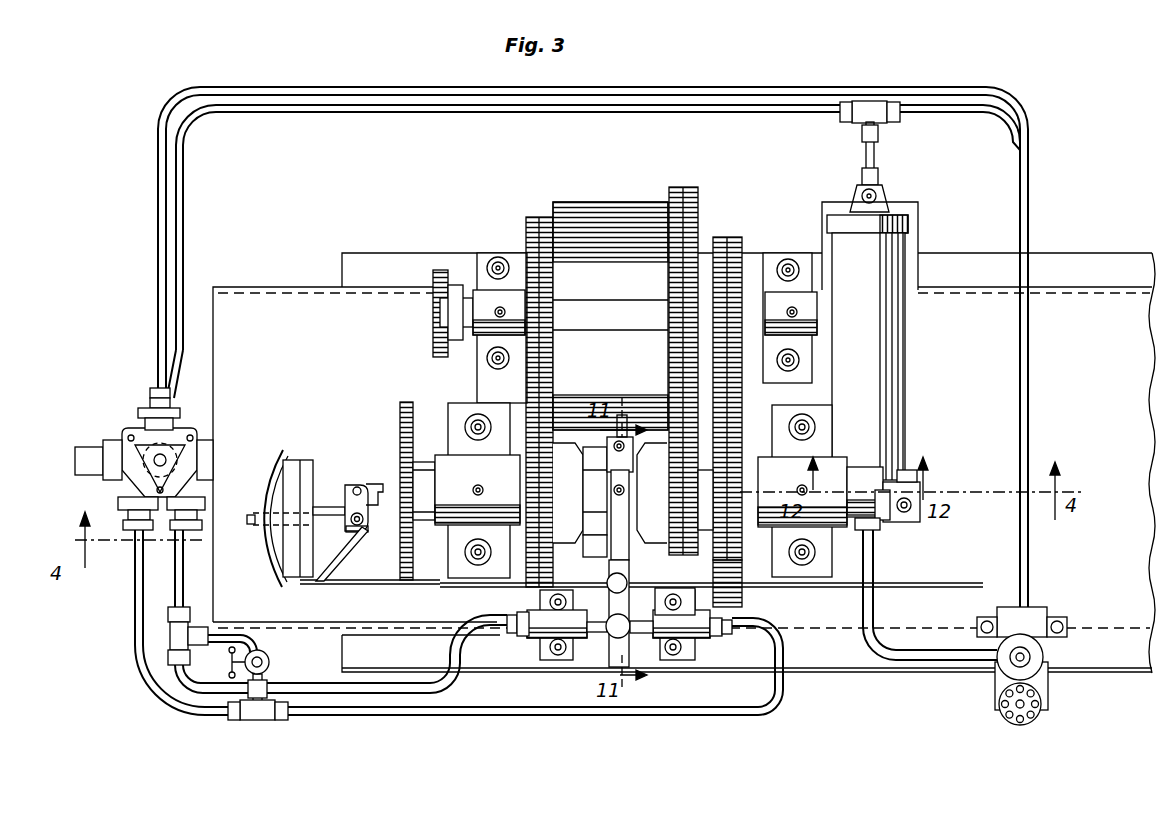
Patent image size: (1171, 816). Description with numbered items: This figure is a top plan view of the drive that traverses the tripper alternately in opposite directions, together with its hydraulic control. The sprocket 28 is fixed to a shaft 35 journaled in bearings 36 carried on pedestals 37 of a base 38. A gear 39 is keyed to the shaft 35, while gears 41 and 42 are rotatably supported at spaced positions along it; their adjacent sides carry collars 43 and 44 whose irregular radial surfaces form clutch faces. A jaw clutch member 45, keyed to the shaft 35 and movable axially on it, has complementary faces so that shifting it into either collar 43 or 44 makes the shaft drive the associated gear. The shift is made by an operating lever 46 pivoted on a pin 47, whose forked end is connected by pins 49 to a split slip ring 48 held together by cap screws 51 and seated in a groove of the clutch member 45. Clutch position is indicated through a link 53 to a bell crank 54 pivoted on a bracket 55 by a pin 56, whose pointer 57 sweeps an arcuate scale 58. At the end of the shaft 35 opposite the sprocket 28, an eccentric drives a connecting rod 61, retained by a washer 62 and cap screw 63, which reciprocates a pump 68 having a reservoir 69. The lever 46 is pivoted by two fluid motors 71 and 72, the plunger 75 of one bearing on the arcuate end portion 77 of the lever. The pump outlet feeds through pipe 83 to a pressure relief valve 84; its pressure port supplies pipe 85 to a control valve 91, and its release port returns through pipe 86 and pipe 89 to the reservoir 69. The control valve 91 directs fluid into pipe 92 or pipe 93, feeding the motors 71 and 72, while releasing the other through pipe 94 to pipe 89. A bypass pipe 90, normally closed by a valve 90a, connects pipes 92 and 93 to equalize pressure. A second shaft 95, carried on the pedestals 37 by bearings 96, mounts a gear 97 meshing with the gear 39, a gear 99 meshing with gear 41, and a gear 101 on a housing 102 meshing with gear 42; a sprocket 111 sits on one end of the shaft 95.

The sprocket 28 is at (403, 412).
The shaft 35 is at (396, 470).
The bearings 36 is at (447, 462).
The pedestals 37 is at (489, 384).
The base 38 is at (272, 312).
The gear 39 is at (743, 597).
The gear 41 is at (678, 563).
The gear 42 is at (540, 550).
The collar 43 is at (661, 530).
The collar 44 is at (560, 477).
The jaw clutch member 45 is at (598, 445).
The operating lever 46 is at (612, 566).
The pin 47 is at (607, 588).
The slip ring 48 is at (613, 467).
The pins 49 is at (620, 497).
The cap screws 51 is at (627, 430).
The link 53 is at (363, 521).
The bell crank 54 is at (353, 490).
The bracket 55 is at (329, 548).
The pin 56 is at (362, 533).
The pointer 57 is at (250, 523).
The arcuate scale 58 is at (271, 465).
The connecting rod 61 is at (874, 527).
The washer 62 is at (885, 516).
The cap screw 63 is at (910, 470).
The reciprocating type pump 68 is at (905, 460).
The fluid reservoir 69 is at (910, 346).
The reciprocating fluid motor 71 is at (698, 640).
The reciprocating fluid motor 72 is at (527, 637).
The plunger 75 is at (643, 637).
The end portion of the lever 77 is at (614, 634).
The pipe 83 is at (862, 600).
The pressure relief valve 84 is at (995, 681).
The pipe 85 is at (1029, 372).
The pipe 86 is at (955, 114).
The pipe 89 is at (868, 152).
The bypass pipe 90 is at (232, 633).
The valve 90a is at (271, 658).
The control valve 91 is at (141, 430).
The pipe 92 is at (135, 551).
The pipe 93 is at (178, 551).
The pipe 94 is at (183, 199).
The second shaft 95 is at (433, 312).
The bearings 96 is at (488, 303).
The gear 97 is at (722, 242).
The gear 99 is at (688, 190).
The gear 101 is at (546, 219).
The housing 102 is at (613, 212).
The sprocket 111 is at (433, 332).